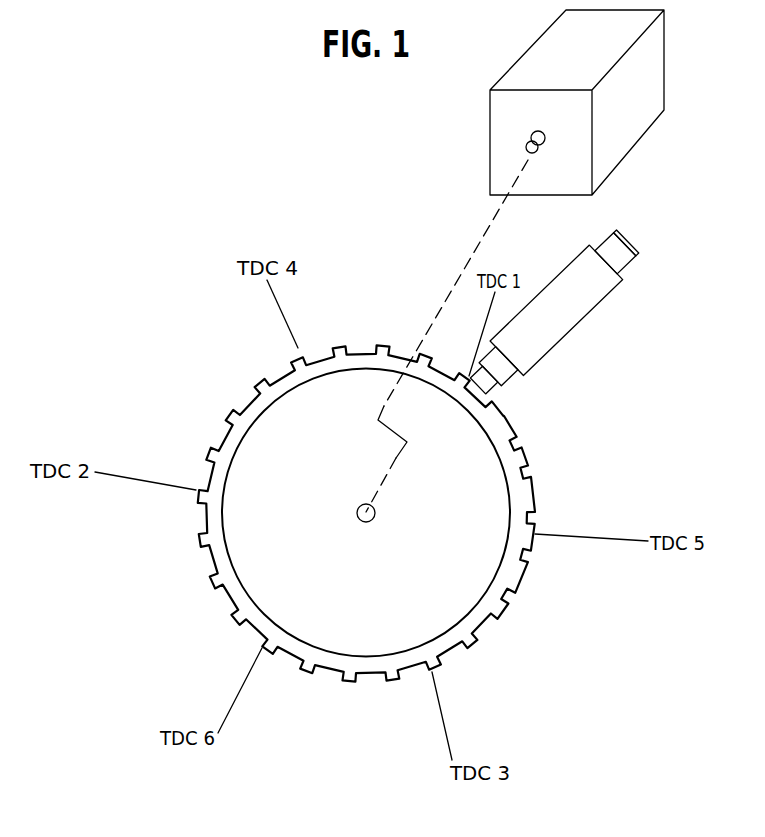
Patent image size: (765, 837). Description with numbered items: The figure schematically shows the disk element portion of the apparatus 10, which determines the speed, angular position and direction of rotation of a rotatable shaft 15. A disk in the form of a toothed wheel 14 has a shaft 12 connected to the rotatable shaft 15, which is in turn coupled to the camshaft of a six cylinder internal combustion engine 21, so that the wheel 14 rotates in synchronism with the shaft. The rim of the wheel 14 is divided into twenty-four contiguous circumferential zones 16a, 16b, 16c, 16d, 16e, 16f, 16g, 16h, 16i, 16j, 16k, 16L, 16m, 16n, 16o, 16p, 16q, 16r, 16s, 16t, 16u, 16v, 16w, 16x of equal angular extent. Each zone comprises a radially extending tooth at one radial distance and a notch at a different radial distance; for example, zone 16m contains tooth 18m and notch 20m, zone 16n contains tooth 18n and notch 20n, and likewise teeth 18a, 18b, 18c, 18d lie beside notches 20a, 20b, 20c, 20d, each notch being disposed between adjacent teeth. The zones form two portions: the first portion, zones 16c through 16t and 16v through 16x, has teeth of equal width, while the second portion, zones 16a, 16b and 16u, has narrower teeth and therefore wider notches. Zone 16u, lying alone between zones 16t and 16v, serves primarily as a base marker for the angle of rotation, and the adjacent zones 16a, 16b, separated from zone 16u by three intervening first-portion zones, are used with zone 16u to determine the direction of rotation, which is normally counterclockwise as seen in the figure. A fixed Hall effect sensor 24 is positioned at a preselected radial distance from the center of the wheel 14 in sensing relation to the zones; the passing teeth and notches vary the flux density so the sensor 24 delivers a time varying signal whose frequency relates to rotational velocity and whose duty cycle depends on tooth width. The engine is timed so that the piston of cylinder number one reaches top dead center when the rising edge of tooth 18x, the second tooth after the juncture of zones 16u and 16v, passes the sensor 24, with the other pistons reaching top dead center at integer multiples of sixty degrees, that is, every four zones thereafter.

The apparatus 10 is at (461, 272).
The shaft 12 is at (357, 516).
The toothed wheel 14 is at (311, 455).
The rotatable shaft 15 is at (528, 140).
The circumferential zone 16a is at (511, 423).
The circumferential zone 16b is at (530, 464).
The circumferential zone 16c is at (537, 510).
The circumferential zone 16d is at (533, 553).
The circumferential zone 16e is at (518, 594).
The circumferential zone 16f is at (492, 631).
The circumferential zone 16g is at (457, 659).
The circumferential zone 16h is at (416, 678).
The circumferential zone 16i is at (372, 685).
The circumferential zone 16j is at (327, 681).
The circumferential zone 16k is at (286, 665).
The circumferential zone 16L is at (250, 639).
The circumferential zone 16m is at (221, 605).
The circumferential zone 16n is at (203, 562).
The circumferential zone 16o is at (196, 519).
The circumferential zone 16p is at (200, 475).
The circumferential zone 16q is at (215, 433).
The circumferential zone 16r is at (241, 397).
The circumferential zone 16s is at (276, 368).
The circumferential zone 16t is at (316, 350).
The circumferential zone 16u is at (361, 343).
The circumferential zone 16v is at (405, 347).
The circumferential zone 16w is at (447, 362).
The circumferential zone 16x is at (486, 390).
The tooth 18a is at (500, 418).
The tooth 18b is at (522, 478).
The tooth 18c is at (532, 510).
The tooth 18d is at (528, 545).
The tooth 18m is at (222, 602).
The tooth 18n is at (208, 563).
The tooth 18x is at (488, 396).
The notch 20a is at (523, 460).
The notch 20b is at (530, 495).
The notch 20c is at (530, 530).
The notch 20d is at (523, 563).
The notch 20m is at (213, 584).
The notch 20n is at (205, 541).
The internal combustion engine 21 is at (490, 133).
The sensor 24 is at (576, 258).